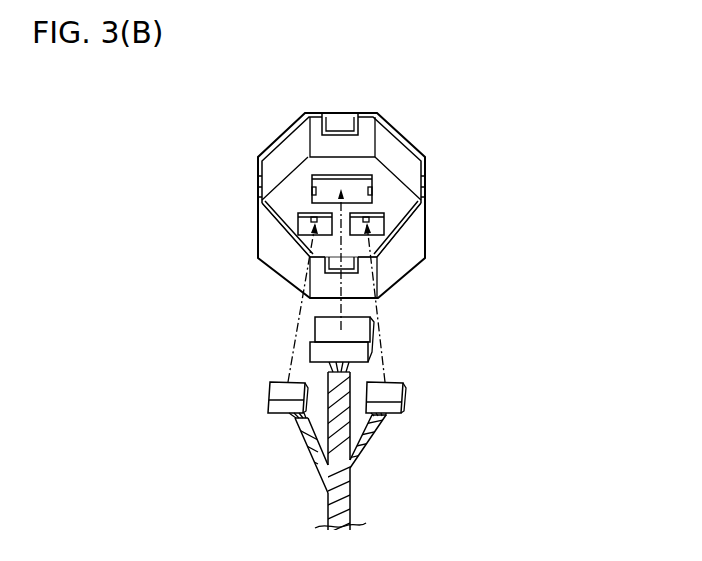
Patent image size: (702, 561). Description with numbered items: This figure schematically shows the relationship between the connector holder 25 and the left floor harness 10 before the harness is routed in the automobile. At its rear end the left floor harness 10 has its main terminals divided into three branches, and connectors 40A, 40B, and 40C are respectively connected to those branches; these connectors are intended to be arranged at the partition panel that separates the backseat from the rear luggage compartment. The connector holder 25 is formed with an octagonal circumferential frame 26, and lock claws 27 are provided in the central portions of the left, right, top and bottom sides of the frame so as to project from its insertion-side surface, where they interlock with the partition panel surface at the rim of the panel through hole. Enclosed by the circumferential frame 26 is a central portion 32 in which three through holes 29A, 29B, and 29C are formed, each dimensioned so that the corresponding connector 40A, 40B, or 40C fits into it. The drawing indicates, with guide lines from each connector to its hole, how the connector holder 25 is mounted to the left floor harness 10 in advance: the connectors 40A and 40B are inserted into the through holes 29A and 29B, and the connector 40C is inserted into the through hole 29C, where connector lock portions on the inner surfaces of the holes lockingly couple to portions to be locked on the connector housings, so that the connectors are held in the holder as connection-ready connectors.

The left floor harness 10 is at (345, 512).
The connector holder 25 is at (421, 138).
The octagonal circumferential frame 26 is at (392, 150).
The lock claw 27 is at (341, 122).
The through hole 29A is at (305, 227).
The through hole 29B is at (383, 223).
The through hole 29C is at (358, 186).
The central portion 32 is at (292, 193).
The connector 40A is at (288, 392).
The connector 40B is at (398, 391).
The connector 40C is at (362, 330).